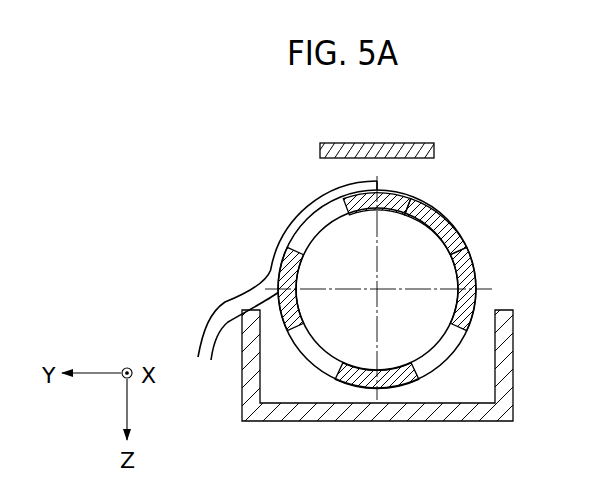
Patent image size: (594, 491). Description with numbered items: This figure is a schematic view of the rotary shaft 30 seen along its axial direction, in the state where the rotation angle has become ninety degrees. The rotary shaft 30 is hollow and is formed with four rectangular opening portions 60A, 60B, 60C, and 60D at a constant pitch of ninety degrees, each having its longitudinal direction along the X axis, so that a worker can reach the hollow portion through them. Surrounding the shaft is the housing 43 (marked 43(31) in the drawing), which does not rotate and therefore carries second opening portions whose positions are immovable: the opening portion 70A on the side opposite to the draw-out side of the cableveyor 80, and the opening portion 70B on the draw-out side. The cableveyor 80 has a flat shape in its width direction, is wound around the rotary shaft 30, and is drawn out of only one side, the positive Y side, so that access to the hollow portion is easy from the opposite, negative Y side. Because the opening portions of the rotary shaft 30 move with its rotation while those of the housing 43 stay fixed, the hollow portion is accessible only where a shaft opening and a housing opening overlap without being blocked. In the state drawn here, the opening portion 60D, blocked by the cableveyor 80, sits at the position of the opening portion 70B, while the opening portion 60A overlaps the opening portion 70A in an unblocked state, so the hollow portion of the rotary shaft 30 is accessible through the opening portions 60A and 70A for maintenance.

The rotary shaft 30 is at (393, 188).
The housing 43 is at (314, 120).
The circuit board 31 is at (318, 147).
The opening portion 60A is at (438, 210).
The opening portion 60B is at (466, 343).
The opening portion 60C is at (305, 364).
The opening portion 60D is at (309, 216).
The opening portion 70A is at (494, 224).
The opening portion 70B is at (260, 241).
The cableveyor 80 is at (257, 294).